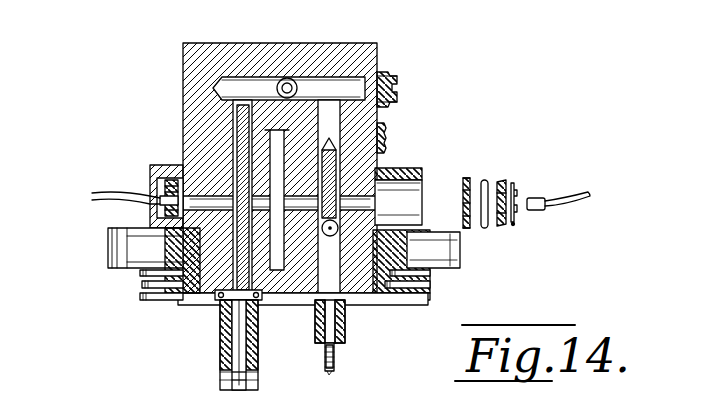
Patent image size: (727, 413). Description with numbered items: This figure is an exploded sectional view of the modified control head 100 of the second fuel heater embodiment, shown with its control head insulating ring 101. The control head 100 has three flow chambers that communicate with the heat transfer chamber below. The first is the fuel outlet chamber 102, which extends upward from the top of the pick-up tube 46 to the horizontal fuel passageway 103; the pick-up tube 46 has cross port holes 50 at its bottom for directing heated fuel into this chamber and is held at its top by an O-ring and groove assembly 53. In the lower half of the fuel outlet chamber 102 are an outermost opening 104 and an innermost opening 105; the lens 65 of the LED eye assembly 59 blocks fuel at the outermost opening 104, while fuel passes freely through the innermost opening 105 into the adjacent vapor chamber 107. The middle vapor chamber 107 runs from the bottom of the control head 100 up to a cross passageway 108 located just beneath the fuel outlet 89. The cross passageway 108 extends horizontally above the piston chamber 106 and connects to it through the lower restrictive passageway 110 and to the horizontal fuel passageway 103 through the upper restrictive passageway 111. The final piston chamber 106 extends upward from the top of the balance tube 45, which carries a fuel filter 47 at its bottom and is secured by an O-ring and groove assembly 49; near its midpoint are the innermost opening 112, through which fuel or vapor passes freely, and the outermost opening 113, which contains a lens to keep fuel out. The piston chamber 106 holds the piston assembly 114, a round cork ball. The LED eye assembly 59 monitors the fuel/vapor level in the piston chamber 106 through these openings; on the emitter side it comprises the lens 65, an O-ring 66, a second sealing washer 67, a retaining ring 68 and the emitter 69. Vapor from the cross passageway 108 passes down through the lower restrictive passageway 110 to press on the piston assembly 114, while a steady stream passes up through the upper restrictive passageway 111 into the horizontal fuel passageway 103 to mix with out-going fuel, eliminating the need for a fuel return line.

The balance tube 45 is at (323, 352).
The pick-up tube 46 is at (222, 343).
The fuel filter 47 is at (335, 360).
The O-ring and groove assembly 49 is at (346, 333).
The cross port holes 50 is at (250, 374).
The O-ring and groove assembly 53 is at (223, 308).
The LED eye assembly 59 is at (137, 181).
The lens 65 is at (468, 230).
The O-ring 66 is at (486, 232).
The second sealing washer 67 is at (502, 178).
The retaining ring 68 is at (515, 226).
The emitter 69 is at (542, 198).
The fuel outlet 89 is at (283, 77).
The modified control head 100 is at (106, 248).
The control head insulating ring 101 is at (160, 302).
The fuel outlet chamber 102 is at (215, 122).
The horizontal fuel passageway 103 is at (262, 84).
The outermost opening 104 is at (433, 192).
The innermost opening 105 is at (313, 307).
The piston chamber 106 is at (378, 168).
The vapor chamber 107 is at (160, 224).
The cross passageway 108 is at (313, 93).
The lower restrictive passageway 110 is at (386, 138).
The upper restrictive passageway 111 is at (383, 113).
The innermost opening 112 is at (240, 160).
The outermost opening 113 is at (236, 185).
The piston assembly 114 is at (347, 300).